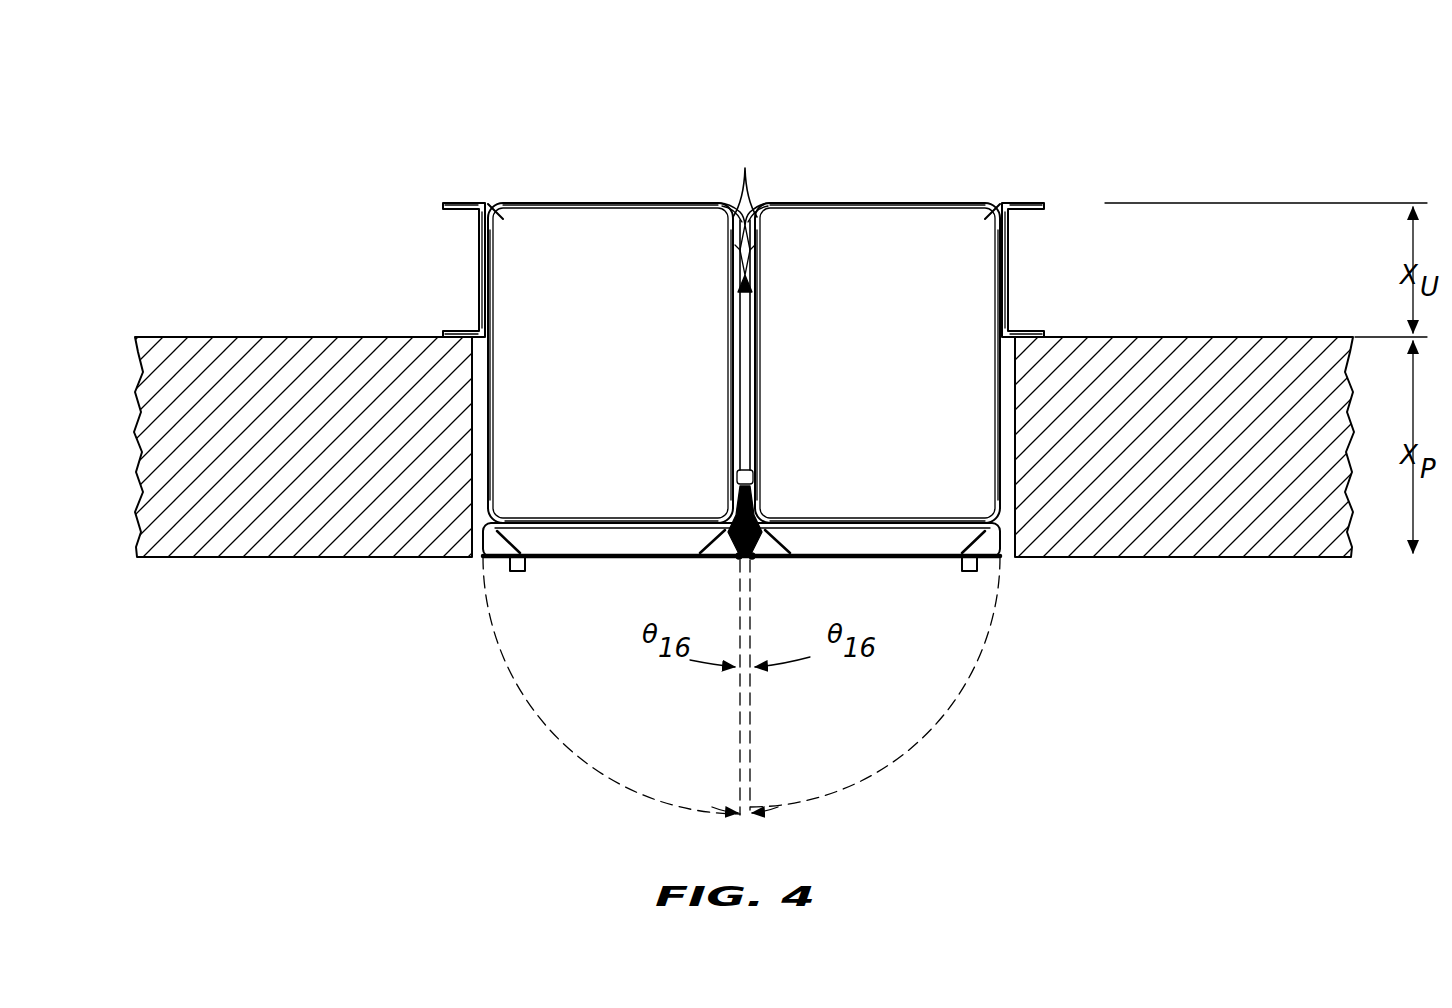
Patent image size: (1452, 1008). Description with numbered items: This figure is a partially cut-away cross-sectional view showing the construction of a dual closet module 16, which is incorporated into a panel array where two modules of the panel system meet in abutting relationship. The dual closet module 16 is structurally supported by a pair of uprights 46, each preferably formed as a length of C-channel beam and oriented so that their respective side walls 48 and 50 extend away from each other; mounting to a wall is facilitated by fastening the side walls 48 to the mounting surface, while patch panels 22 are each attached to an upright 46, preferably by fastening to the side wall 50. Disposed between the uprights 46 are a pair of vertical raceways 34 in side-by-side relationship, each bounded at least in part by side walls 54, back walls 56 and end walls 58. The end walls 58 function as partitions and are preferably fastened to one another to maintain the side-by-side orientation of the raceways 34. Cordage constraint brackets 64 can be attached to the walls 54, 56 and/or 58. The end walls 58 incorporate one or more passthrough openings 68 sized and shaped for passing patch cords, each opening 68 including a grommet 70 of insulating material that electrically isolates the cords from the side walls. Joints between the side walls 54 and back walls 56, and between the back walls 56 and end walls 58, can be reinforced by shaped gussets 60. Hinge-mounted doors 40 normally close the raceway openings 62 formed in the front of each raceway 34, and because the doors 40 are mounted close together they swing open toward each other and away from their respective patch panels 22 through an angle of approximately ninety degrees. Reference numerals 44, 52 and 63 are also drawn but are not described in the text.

The dual closet module 16 is at (412, 138).
The patch panel 22 is at (302, 517).
The vertical raceway 34 is at (555, 292).
The door 40 is at (622, 565).
The lower cover 44 is at (530, 557).
The upright 46 is at (466, 202).
The side wall 48 is at (460, 222).
The side wall 50 is at (462, 320).
The web 52 is at (478, 270).
The side wall 54 is at (488, 310).
The back wall 56 is at (657, 203).
The end wall 58 is at (742, 253).
The shaped gusset 60 is at (746, 168).
The raceway opening 62 is at (632, 505).
The pivot 63 is at (745, 560).
The cordage constraint bracket 64 is at (505, 465).
The passthrough opening 68 is at (702, 298).
The grommet 70 is at (757, 328).